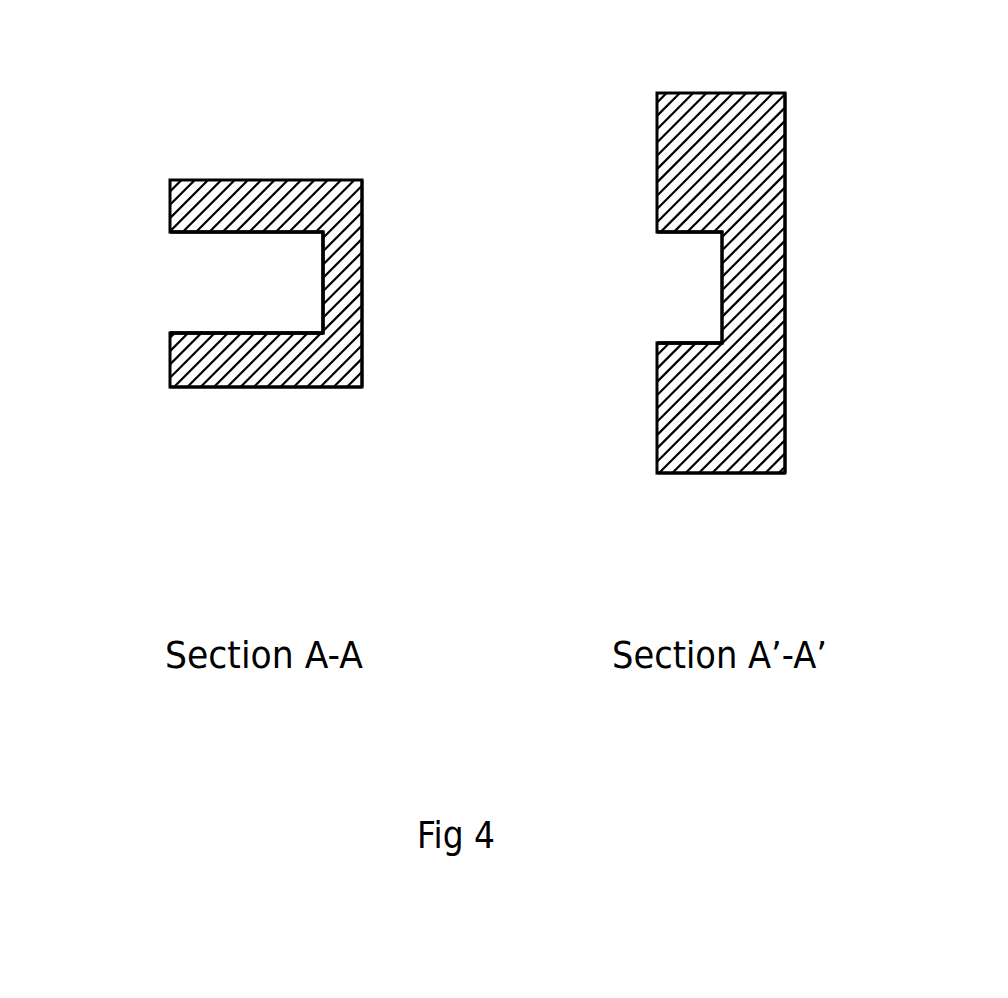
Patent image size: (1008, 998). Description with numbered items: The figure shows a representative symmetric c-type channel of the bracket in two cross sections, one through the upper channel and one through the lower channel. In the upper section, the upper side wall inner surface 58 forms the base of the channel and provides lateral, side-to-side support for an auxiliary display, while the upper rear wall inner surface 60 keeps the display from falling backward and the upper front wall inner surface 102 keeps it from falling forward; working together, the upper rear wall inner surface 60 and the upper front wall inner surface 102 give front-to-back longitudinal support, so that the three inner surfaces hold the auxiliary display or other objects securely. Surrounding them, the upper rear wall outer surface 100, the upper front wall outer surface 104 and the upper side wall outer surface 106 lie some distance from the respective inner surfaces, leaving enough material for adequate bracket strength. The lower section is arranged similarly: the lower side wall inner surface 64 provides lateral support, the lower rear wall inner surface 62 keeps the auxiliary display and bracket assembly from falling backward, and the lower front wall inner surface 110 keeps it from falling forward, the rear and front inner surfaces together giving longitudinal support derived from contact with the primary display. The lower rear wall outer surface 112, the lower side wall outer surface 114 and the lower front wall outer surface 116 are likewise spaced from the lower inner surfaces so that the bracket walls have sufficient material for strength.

The upper rear wall outer surface 100 is at (267, 178).
The upper front wall outer surface 104 is at (265, 387).
The upper side wall outer surface 106 is at (362, 280).
The upper side wall inner surface 58 is at (323, 283).
The upper rear wall inner surface 60 is at (248, 240).
The upper front wall inner surface 102 is at (248, 332).
The lower rear wall outer surface 112 is at (718, 92).
The lower side wall outer surface 114 is at (785, 280).
The lower front wall outer surface 116 is at (722, 473).
The lower side wall inner surface 64 is at (722, 287).
The lower rear wall inner surface 62 is at (688, 238).
The lower front wall inner surface 110 is at (688, 333).